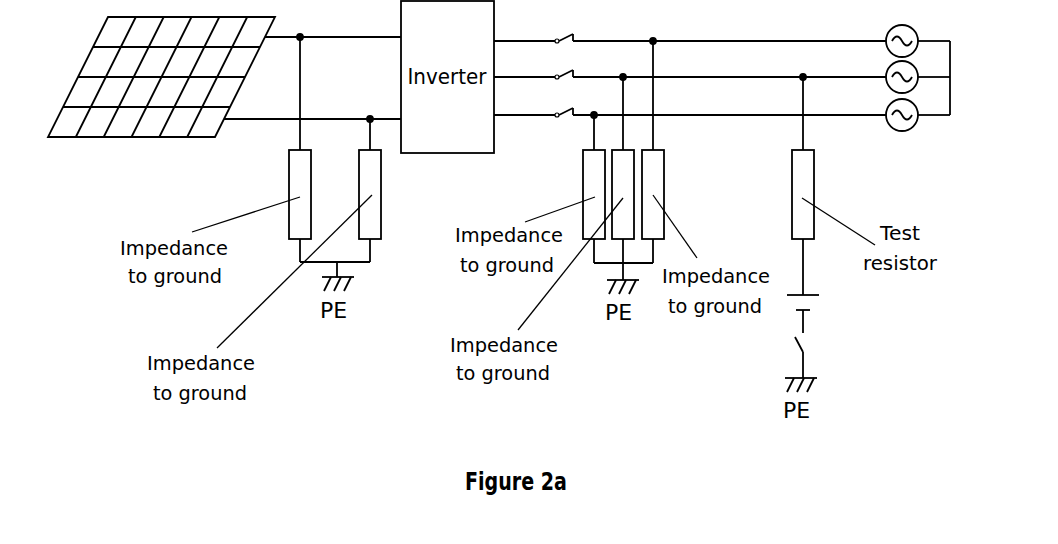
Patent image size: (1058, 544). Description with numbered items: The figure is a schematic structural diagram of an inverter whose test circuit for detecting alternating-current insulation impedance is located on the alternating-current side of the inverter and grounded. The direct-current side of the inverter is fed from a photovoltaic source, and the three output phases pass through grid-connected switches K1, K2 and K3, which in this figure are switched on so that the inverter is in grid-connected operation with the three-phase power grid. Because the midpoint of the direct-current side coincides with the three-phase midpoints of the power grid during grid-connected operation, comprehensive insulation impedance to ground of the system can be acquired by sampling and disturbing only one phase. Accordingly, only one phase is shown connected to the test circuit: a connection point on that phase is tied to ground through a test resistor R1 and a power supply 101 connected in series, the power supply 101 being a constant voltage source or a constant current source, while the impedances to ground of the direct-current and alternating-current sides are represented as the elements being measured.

The power supply 101 is at (820, 315).
The test resistor R1 is at (816, 194).
The switch K1 is at (549, 25).
The switch K2 is at (549, 61).
The switch K3 is at (549, 99).